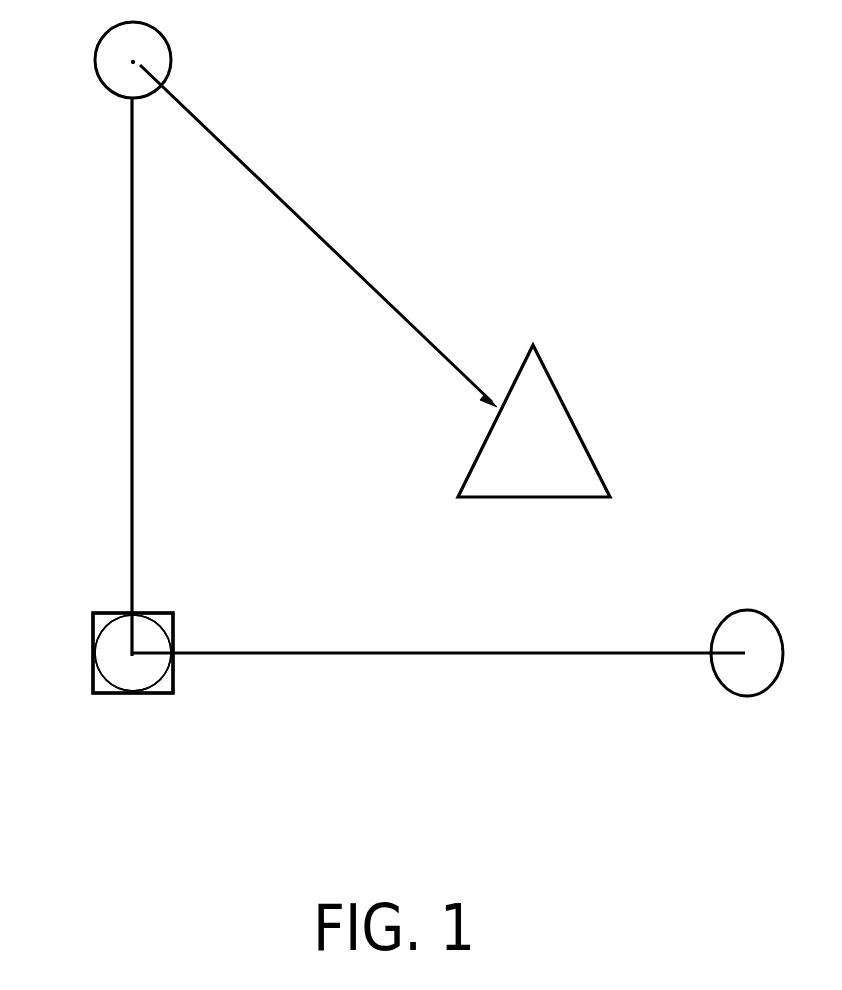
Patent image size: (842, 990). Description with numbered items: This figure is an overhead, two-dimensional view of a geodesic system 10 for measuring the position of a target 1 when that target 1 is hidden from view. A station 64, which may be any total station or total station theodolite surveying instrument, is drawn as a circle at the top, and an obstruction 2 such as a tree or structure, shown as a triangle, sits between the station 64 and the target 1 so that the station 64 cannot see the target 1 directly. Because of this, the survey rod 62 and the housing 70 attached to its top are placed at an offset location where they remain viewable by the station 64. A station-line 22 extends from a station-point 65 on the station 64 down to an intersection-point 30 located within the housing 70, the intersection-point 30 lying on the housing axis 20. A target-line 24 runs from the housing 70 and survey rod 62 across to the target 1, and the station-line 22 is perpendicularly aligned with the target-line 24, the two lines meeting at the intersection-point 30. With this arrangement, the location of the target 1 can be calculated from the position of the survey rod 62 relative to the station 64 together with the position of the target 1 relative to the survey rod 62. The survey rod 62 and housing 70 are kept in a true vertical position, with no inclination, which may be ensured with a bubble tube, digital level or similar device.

The target 1 is at (747, 653).
The obstruction 2 is at (534, 421).
The geodesic system 10 is at (515, 180).
The housing axis 20 is at (134, 658).
The station-line 22 is at (164, 377).
The target-line 24 is at (438, 627).
The intersection-point 30 is at (198, 699).
The survey rod 62 is at (148, 637).
The station 64 is at (133, 60).
The station-point 65 is at (133, 62).
The housing 70 is at (97, 613).